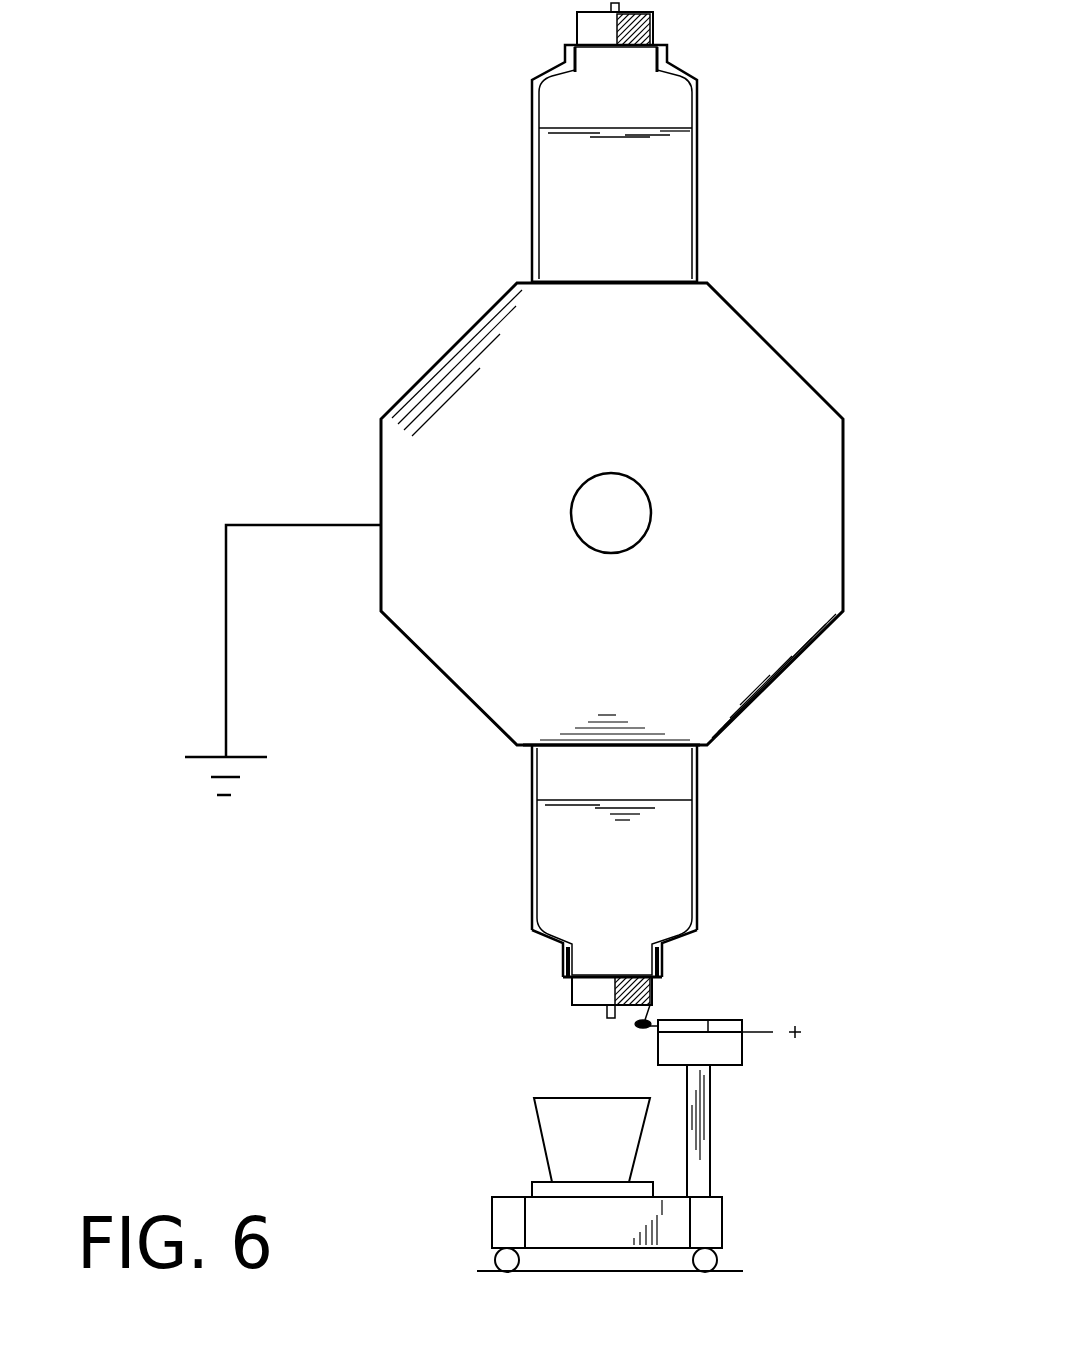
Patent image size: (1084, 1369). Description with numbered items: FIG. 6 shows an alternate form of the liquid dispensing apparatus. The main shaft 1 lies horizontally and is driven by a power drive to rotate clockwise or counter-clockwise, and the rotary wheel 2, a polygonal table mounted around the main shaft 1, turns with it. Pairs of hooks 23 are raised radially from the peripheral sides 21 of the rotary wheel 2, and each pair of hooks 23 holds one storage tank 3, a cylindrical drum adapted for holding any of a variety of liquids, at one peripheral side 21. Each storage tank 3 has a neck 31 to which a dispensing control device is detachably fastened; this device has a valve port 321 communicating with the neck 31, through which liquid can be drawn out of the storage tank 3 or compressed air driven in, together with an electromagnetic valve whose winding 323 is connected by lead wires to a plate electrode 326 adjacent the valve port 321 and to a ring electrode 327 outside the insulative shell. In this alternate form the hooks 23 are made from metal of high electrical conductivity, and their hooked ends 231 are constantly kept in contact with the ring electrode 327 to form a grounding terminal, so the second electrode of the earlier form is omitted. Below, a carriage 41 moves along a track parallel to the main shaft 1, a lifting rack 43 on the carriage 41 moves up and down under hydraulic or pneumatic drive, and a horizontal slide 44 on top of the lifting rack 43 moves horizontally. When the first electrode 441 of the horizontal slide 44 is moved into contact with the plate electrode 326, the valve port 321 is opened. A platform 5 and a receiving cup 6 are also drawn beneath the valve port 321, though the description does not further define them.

The main shaft 1 is at (632, 500).
The rotary wheel 2 is at (815, 515).
The storage tank 3 is at (672, 170).
The peripheral side 21 is at (620, 745).
The hooks 23 is at (530, 880).
The neck 31 is at (607, 955).
The hooked ends 231 is at (553, 955).
The ring electrode 327 is at (560, 973).
The plate electrode 326 is at (582, 1005).
The winding of the electromagnetic valve 323 is at (655, 990).
The valve port 321 is at (608, 1018).
The first electrode 441 is at (708, 1020).
The horizontal slide 44 is at (730, 1055).
The lifting rack 43 is at (700, 1122).
The carriage 41 is at (713, 1220).
The platform 5 is at (540, 1188).
The receiving cup 6 is at (550, 1122).